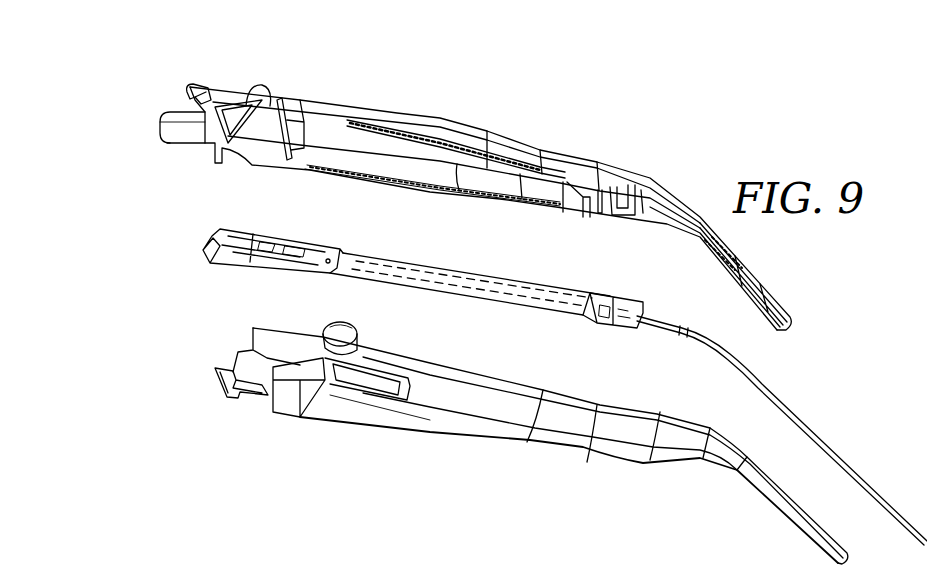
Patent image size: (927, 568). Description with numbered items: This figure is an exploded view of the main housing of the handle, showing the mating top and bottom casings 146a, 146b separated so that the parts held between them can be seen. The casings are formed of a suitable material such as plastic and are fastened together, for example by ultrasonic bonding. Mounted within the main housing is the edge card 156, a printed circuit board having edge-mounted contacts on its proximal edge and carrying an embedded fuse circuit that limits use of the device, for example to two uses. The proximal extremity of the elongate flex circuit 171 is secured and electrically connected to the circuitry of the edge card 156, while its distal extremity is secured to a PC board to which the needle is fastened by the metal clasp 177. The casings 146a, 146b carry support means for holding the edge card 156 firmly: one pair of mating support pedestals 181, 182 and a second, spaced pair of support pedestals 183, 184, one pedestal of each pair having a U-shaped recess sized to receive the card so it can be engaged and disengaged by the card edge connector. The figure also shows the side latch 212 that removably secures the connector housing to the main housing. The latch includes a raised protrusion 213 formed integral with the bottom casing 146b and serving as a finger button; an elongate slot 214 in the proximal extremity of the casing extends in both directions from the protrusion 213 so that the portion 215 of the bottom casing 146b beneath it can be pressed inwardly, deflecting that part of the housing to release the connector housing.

The top casing 146a is at (465, 188).
The bottom casing 146b is at (525, 438).
The support pedestal 181 is at (210, 118).
The support pedestal 183 is at (293, 130).
The edge card 156 is at (324, 250).
The elongate flex circuit 171 is at (565, 376).
The metal clasp 177 is at (634, 326).
The support pedestal 182 is at (280, 373).
The raised protrusion 213 is at (349, 331).
The elongate slot 214 is at (350, 391).
The portion of the bottom casing 215 is at (380, 352).
The support pedestal 184 is at (380, 433).
The side latch 212 is at (592, 556).